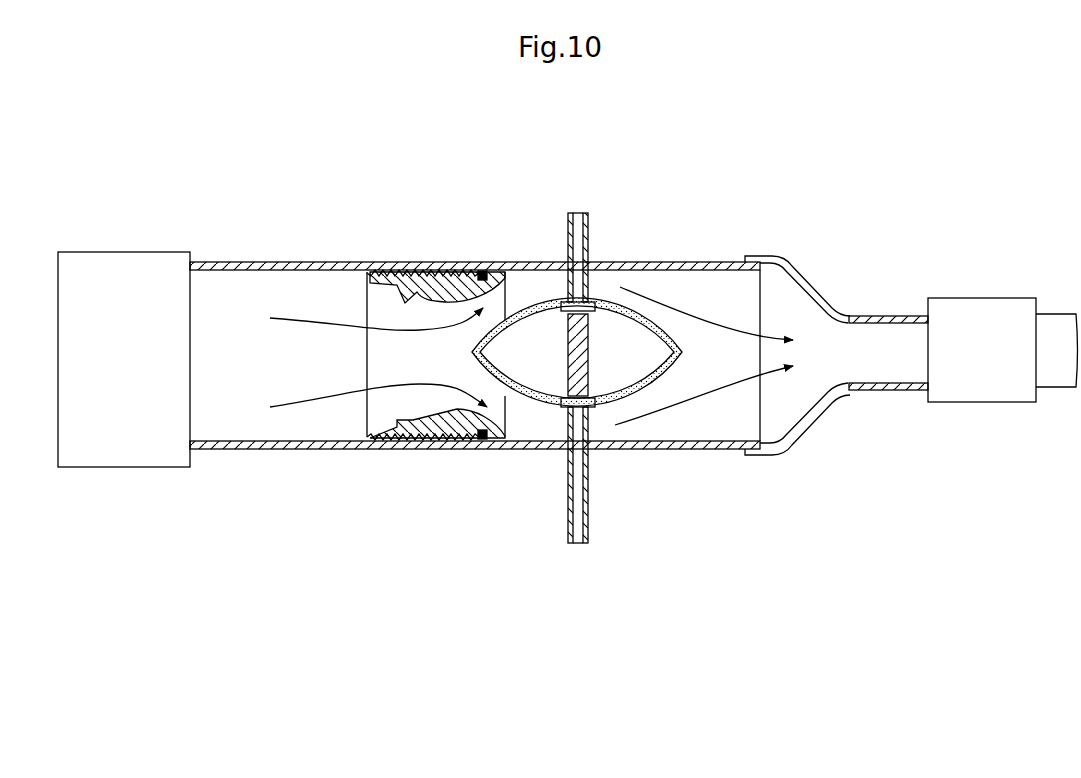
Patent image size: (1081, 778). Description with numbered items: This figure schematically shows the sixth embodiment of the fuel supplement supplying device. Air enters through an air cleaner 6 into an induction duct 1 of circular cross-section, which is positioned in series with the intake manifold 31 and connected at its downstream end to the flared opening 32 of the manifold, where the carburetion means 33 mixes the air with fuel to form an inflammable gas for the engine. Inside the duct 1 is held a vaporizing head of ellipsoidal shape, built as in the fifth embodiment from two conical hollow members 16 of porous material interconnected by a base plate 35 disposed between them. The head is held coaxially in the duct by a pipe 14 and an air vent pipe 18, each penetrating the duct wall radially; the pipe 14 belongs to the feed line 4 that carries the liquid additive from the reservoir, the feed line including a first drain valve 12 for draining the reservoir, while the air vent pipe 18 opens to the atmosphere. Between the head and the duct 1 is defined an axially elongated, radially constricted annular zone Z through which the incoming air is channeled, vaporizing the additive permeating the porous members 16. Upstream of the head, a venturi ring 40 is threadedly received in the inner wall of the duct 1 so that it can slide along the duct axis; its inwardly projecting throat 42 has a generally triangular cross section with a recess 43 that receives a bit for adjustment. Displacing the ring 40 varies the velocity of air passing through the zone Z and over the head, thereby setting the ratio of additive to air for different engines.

The induction duct 1 is at (300, 447).
The feed line 4 is at (484, 271).
The air cleaner 6 is at (118, 460).
The first drain valve 12 is at (531, 297).
The pipe 14 is at (588, 500).
The conical hollow member 16 is at (540, 412).
The air vent pipe 18 is at (590, 234).
The intake manifold 31 is at (882, 314).
The flared opening 32 is at (785, 284).
The carburetion means 33 is at (993, 298).
The base plate 35 is at (590, 345).
The venturi ring 40 is at (378, 357).
The throat 42 is at (440, 440).
The recess 43 is at (400, 298).
The annular zone Z is at (548, 280).